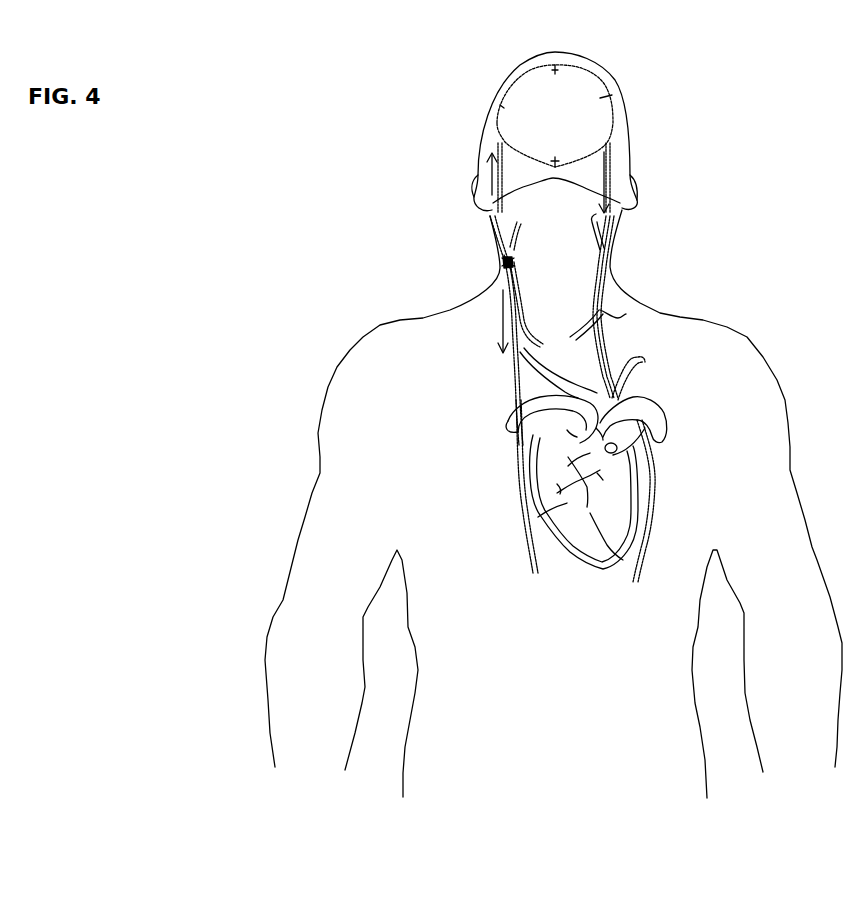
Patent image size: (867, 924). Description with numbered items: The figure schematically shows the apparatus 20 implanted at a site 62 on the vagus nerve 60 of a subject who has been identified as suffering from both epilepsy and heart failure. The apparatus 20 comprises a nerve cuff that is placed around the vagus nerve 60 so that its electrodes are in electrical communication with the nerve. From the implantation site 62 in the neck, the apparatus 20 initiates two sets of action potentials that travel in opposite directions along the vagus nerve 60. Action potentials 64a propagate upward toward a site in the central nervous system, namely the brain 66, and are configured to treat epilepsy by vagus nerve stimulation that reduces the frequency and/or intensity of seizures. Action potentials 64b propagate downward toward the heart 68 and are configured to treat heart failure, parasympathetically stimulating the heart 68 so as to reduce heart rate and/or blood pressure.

The brain 66 is at (585, 107).
The action potentials 64a is at (492, 185).
The apparatus 20 is at (503, 260).
The site 62 is at (493, 262).
The action potentials 64b is at (503, 340).
The vagus nerve 60 is at (530, 560).
The heart 68 is at (580, 572).